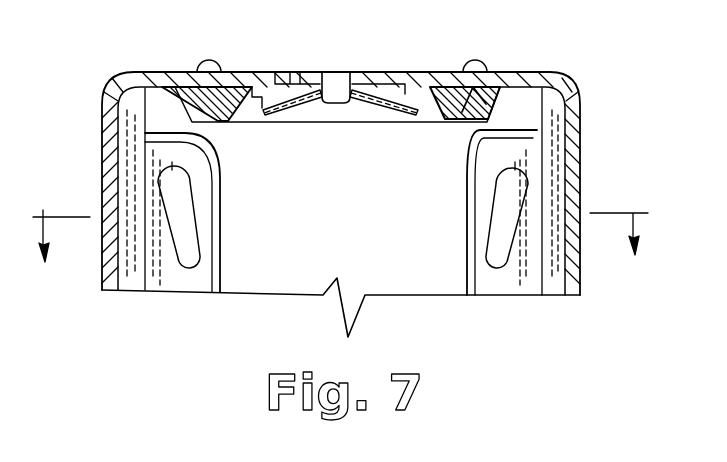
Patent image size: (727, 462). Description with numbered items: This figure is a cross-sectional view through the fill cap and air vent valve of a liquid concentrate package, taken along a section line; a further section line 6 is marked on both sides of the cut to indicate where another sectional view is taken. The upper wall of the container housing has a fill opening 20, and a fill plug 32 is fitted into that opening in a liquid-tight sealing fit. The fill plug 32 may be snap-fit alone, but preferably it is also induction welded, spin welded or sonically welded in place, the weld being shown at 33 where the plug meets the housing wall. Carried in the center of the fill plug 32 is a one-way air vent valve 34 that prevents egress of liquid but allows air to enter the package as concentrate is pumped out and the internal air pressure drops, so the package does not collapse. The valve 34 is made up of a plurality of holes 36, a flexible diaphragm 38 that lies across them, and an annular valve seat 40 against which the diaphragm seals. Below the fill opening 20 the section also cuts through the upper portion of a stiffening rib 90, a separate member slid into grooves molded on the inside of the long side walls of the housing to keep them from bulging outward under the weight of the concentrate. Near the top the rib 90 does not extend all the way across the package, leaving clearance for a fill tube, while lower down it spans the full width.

The section line 6- 6 is at (340, 254).
The fill opening 20 is at (216, 105).
The fill plug 32 is at (438, 82).
The weld 33 is at (478, 67).
The one-way air vent valve 34 is at (304, 90).
The holes 36 is at (365, 72).
The flexible diaphragm 38 is at (392, 92).
The annular valve seat 40 is at (266, 84).
The stiffening rib 90 is at (222, 200).